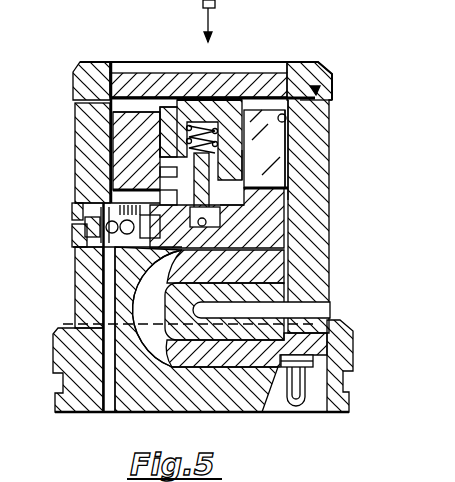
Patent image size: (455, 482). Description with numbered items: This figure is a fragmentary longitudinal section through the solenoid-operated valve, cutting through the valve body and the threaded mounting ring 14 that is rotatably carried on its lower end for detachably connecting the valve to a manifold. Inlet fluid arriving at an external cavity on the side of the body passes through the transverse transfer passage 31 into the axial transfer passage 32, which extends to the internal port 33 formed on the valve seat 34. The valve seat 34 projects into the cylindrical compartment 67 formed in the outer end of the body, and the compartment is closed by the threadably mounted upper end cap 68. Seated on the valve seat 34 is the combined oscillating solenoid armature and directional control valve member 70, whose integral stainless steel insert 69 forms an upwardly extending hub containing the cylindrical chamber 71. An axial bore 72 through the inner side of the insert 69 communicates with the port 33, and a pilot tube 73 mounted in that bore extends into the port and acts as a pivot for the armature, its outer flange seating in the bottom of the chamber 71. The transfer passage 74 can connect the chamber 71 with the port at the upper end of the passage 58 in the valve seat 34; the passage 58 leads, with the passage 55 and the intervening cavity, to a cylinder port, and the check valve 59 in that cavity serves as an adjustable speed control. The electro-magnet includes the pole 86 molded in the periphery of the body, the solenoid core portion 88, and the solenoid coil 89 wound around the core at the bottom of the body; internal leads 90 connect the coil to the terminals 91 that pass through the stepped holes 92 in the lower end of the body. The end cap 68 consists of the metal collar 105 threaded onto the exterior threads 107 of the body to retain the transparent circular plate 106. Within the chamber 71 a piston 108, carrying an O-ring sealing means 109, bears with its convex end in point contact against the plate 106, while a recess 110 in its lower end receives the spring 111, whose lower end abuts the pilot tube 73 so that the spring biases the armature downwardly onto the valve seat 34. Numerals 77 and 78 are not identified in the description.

The mounting ring 14 is at (60, 334).
The transverse transfer passage 31 is at (210, 225).
The axial transfer passage 32 is at (215, 215).
The internal port 33 is at (232, 200).
The valve seat 34 is at (250, 180).
The passage 55 is at (101, 412).
The passage 58 is at (115, 203).
The check valve 59 is at (68, 244).
The cylindrical compartment 67 is at (286, 120).
The upper end cap 68 is at (332, 60).
The insert 69 is at (240, 97).
The combined oscillating solenoid armature and directional control valve member 70 is at (291, 143).
The cylindrical chamber 71 is at (162, 141).
The axial bore 72 is at (210, 172).
The pilot tube 73 is at (244, 158).
The transfer passage 74 is at (170, 172).
The housing wall 77 is at (118, 147).
The partition 78 is at (286, 157).
The pole 86 is at (313, 278).
The solenoid core portion 88 is at (173, 298).
The solenoid coil 89 is at (263, 267).
The internal leads 90 is at (270, 412).
The terminals 91 is at (297, 404).
The stepped holes 92 is at (313, 412).
The metal collar 105 is at (88, 64).
The transparent circular plate 106 is at (232, 108).
The exterior threads 107 is at (318, 93).
The piston 108 is at (207, 100).
The O-ring sealing means 109 is at (180, 120).
The recess 110 is at (284, 133).
The spring 111 is at (166, 135).